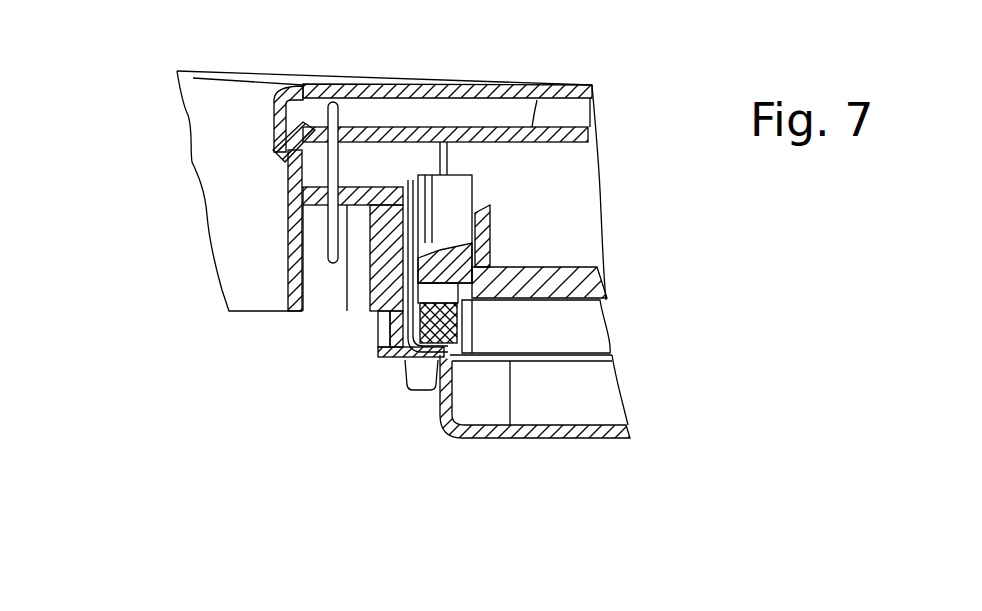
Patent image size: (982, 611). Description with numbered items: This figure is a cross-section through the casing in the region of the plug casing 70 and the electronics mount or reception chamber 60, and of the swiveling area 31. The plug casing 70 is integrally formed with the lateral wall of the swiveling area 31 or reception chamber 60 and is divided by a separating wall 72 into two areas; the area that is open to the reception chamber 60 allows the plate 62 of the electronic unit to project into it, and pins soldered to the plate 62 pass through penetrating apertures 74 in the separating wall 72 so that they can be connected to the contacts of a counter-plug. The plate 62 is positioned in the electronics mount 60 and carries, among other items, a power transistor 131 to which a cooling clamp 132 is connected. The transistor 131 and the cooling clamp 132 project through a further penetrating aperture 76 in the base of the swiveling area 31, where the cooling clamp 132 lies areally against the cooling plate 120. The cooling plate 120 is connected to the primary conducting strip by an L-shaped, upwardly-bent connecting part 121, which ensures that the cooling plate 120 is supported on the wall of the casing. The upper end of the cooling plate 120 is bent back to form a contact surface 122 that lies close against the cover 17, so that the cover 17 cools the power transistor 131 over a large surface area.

The cover 17 is at (557, 437).
The swiveling area 31 is at (582, 328).
The reception chamber 60 is at (553, 232).
The plate 62 is at (553, 88).
The plug casing 70 is at (290, 254).
The separating wall 72 is at (362, 188).
The penetrating apertures 74 is at (288, 190).
The penetrating aperture 76 is at (445, 313).
The cooling plate 120 is at (393, 190).
The connecting part 121 is at (377, 333).
The contact surface 122 is at (421, 375).
The power transistor 131 is at (472, 194).
The cooling clamp 132 is at (423, 183).